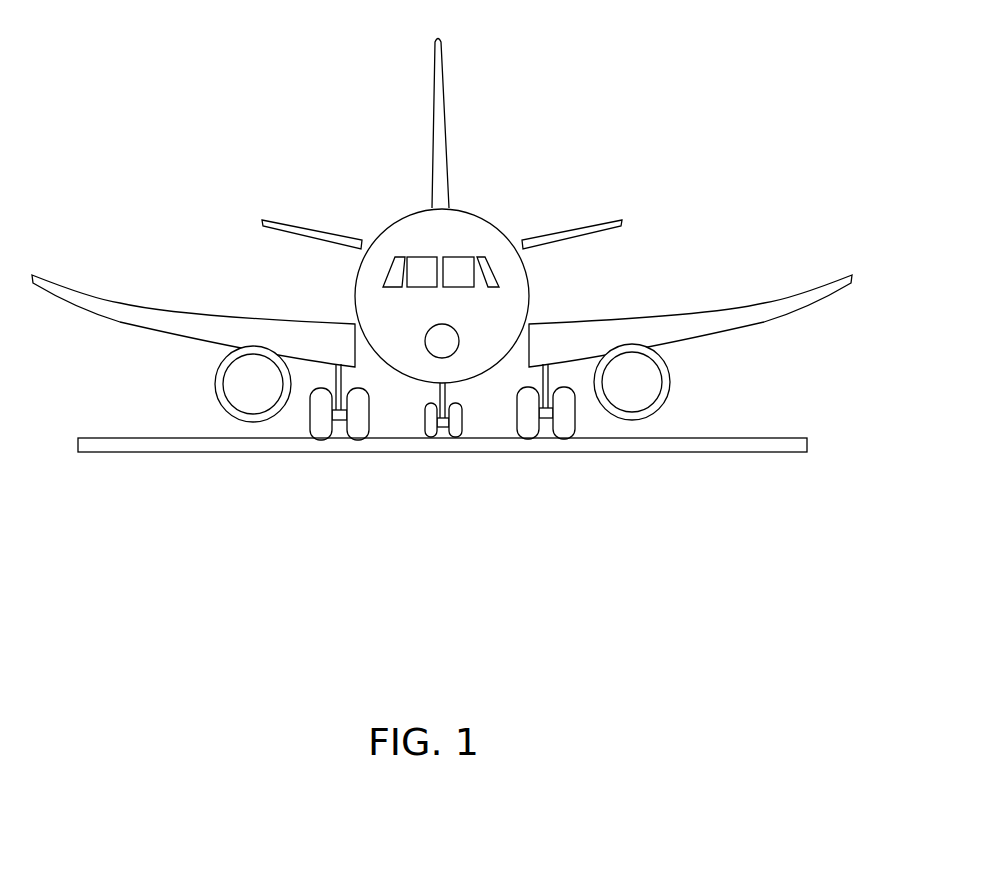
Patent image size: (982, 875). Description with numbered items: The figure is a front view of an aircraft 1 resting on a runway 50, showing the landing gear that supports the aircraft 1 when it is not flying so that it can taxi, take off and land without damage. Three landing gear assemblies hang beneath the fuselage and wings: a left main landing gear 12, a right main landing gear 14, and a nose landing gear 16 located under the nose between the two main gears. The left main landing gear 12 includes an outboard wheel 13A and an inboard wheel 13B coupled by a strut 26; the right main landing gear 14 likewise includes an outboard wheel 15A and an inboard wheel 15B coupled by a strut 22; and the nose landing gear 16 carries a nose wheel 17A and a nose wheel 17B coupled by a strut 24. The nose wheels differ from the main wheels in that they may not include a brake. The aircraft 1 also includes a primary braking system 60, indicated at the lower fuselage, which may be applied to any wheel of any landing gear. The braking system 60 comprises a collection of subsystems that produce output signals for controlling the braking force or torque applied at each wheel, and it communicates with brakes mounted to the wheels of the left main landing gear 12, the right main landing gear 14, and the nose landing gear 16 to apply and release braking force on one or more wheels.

The aircraft 1 is at (442, 291).
The left main landing gear 12 is at (626, 391).
The outboard wheel 13A is at (576, 432).
The inboard wheel 13B is at (534, 384).
The right main landing gear 14 is at (258, 462).
The outboard wheel 15A is at (308, 430).
The inboard wheel 15B is at (337, 433).
The nose landing gear 16 is at (488, 412).
The nose wheel 17A is at (462, 428).
The nose wheel 17B is at (424, 433).
The strut 22 is at (310, 432).
The strut 24 is at (441, 430).
The strut 26 is at (542, 430).
The runway 50 is at (758, 448).
The primary braking system 60 is at (395, 378).